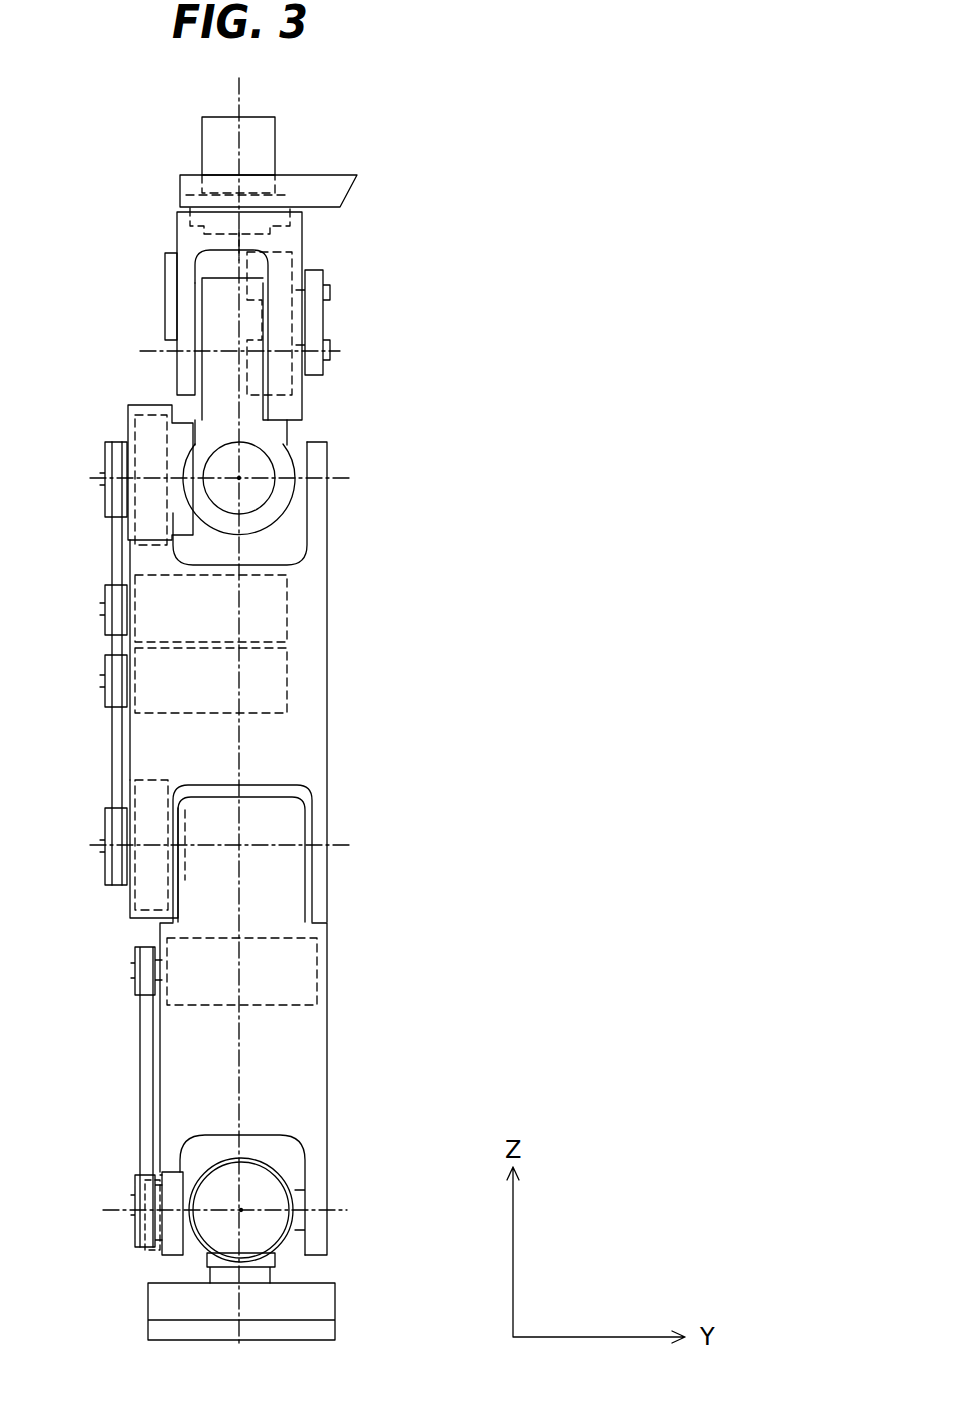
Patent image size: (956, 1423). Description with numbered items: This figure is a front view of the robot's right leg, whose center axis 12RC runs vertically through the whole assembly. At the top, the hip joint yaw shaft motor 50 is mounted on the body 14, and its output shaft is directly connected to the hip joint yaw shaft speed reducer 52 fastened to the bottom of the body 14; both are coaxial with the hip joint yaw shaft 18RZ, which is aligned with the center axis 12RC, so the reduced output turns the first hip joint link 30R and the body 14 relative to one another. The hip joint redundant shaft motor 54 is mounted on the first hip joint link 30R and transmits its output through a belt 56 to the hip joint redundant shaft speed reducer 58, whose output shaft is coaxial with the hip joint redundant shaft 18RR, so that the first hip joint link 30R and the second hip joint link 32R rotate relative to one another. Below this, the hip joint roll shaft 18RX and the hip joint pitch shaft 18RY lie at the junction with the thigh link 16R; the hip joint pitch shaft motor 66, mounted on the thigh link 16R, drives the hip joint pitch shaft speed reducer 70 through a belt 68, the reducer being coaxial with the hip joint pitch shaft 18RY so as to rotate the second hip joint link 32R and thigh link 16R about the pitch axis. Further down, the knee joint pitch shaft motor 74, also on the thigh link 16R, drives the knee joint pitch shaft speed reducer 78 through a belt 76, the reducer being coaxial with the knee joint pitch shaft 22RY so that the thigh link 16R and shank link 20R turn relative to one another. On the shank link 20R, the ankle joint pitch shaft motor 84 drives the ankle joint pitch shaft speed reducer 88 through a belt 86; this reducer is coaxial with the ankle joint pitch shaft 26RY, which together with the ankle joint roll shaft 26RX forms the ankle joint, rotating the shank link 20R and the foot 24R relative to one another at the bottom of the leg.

The center axis of the leg 12RC is at (239, 100).
The hip joint yaw shaft motor 50 is at (258, 148).
The hip joint yaw shaft speed reducer 52 is at (186, 196).
The body 14 is at (340, 178).
The first hip joint link 30R is at (183, 240).
The hip joint yaw shaft 18RZ is at (239, 248).
The hip joint redundant shaft motor 54 is at (167, 275).
The hip joint redundant shaft 18RR is at (155, 350).
The belt 56 is at (318, 308).
The hip joint redundant shaft speed reducer 58 is at (290, 395).
The hip joint pitch shaft speed reducer 70 is at (150, 405).
The second hip joint link 32R is at (268, 428).
The hip joint roll shaft 18RX is at (239, 478).
The hip joint pitch shaft 18RY is at (337, 480).
The belt 68 is at (112, 540).
The hip joint pitch shaft motor 66 is at (287, 598).
The knee joint pitch shaft motor 74 is at (287, 668).
The belt 76 is at (112, 745).
The thigh link 16R is at (315, 748).
The knee joint pitch shaft 22RY is at (342, 843).
The knee joint pitch shaft speed reducer 78 is at (128, 903).
The ankle joint pitch shaft motor 84 is at (317, 960).
The belt 86 is at (148, 1045).
The shank link 20R is at (312, 1080).
The ankle joint roll shaft 26RX is at (241, 1210).
The ankle joint pitch shaft 26RY is at (333, 1210).
The ankle joint pitch shaft speed reducer 88 is at (165, 1262).
The foot 24R is at (330, 1305).